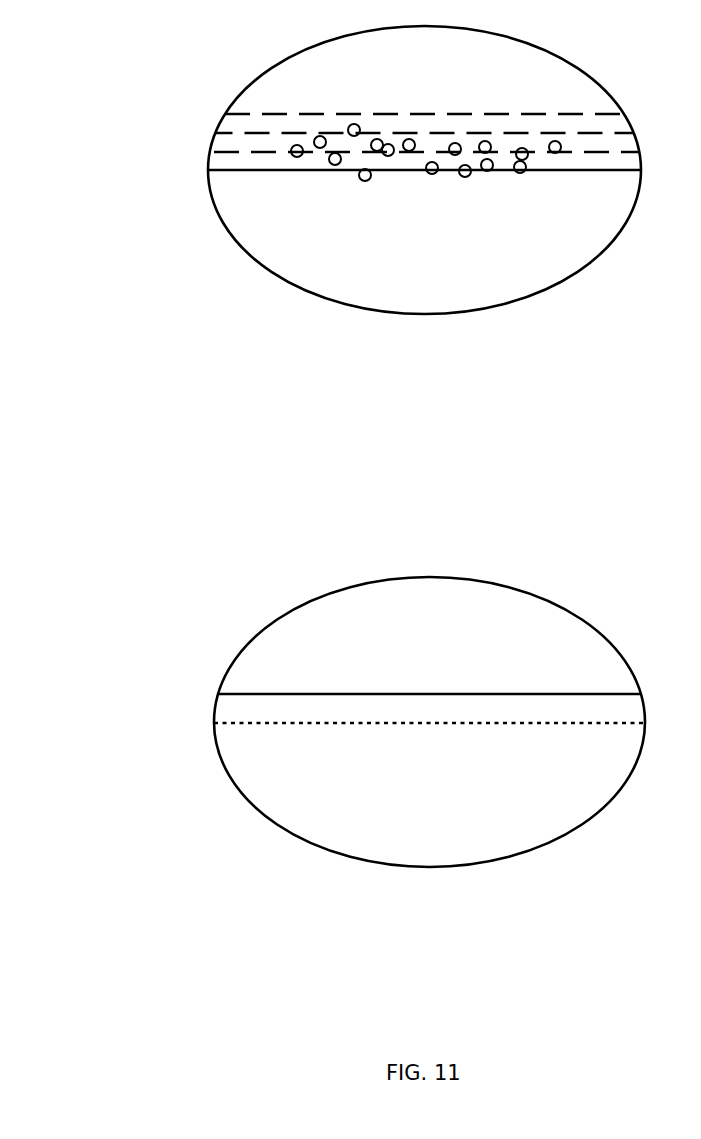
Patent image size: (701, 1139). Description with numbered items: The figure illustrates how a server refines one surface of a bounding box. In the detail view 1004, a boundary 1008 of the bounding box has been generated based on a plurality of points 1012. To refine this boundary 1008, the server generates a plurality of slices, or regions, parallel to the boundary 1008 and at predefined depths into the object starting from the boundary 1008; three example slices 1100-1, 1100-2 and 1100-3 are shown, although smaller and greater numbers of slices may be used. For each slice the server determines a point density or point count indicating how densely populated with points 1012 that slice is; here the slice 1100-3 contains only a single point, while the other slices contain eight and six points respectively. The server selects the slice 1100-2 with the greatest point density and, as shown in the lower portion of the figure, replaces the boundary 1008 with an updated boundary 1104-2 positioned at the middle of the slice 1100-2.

The detail view 1004 is at (263, 270).
The boundary 1008 is at (252, 170).
The points 1012 is at (555, 141).
The slice 1100-1 is at (210, 160).
The slice 1100-2 is at (213, 143).
The slice 1100-3 is at (213, 125).
The updated boundary 1104-2 is at (262, 694).